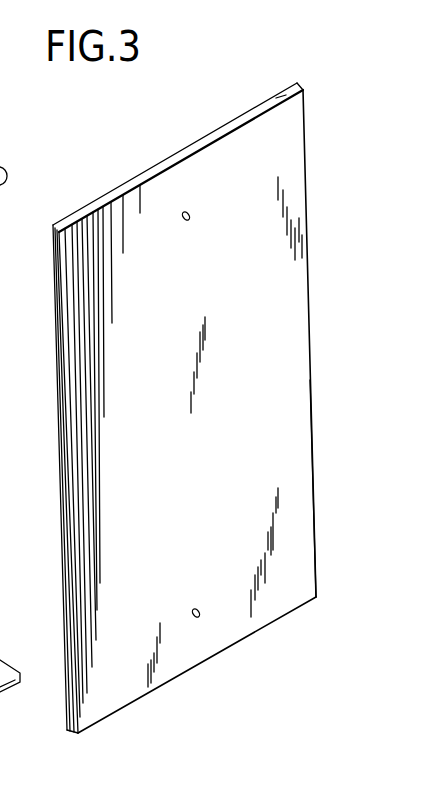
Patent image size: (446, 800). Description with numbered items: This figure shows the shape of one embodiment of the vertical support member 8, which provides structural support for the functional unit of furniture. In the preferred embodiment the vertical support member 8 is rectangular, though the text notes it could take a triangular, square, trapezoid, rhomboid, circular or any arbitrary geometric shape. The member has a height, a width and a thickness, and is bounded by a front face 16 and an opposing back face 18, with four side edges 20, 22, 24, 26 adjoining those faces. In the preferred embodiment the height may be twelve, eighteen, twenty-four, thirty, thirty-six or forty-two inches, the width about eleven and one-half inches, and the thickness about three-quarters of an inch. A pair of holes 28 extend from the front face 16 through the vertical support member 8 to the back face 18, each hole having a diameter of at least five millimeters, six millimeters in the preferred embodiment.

The vertical support member 8 is at (106, 156).
The front face 16 is at (82, 424).
The back face 18 is at (319, 445).
The side edge 20 is at (246, 113).
The side edge 22 is at (313, 380).
The side edge 24 is at (150, 692).
The side edge 26 is at (63, 333).
The holes 28 is at (192, 215).